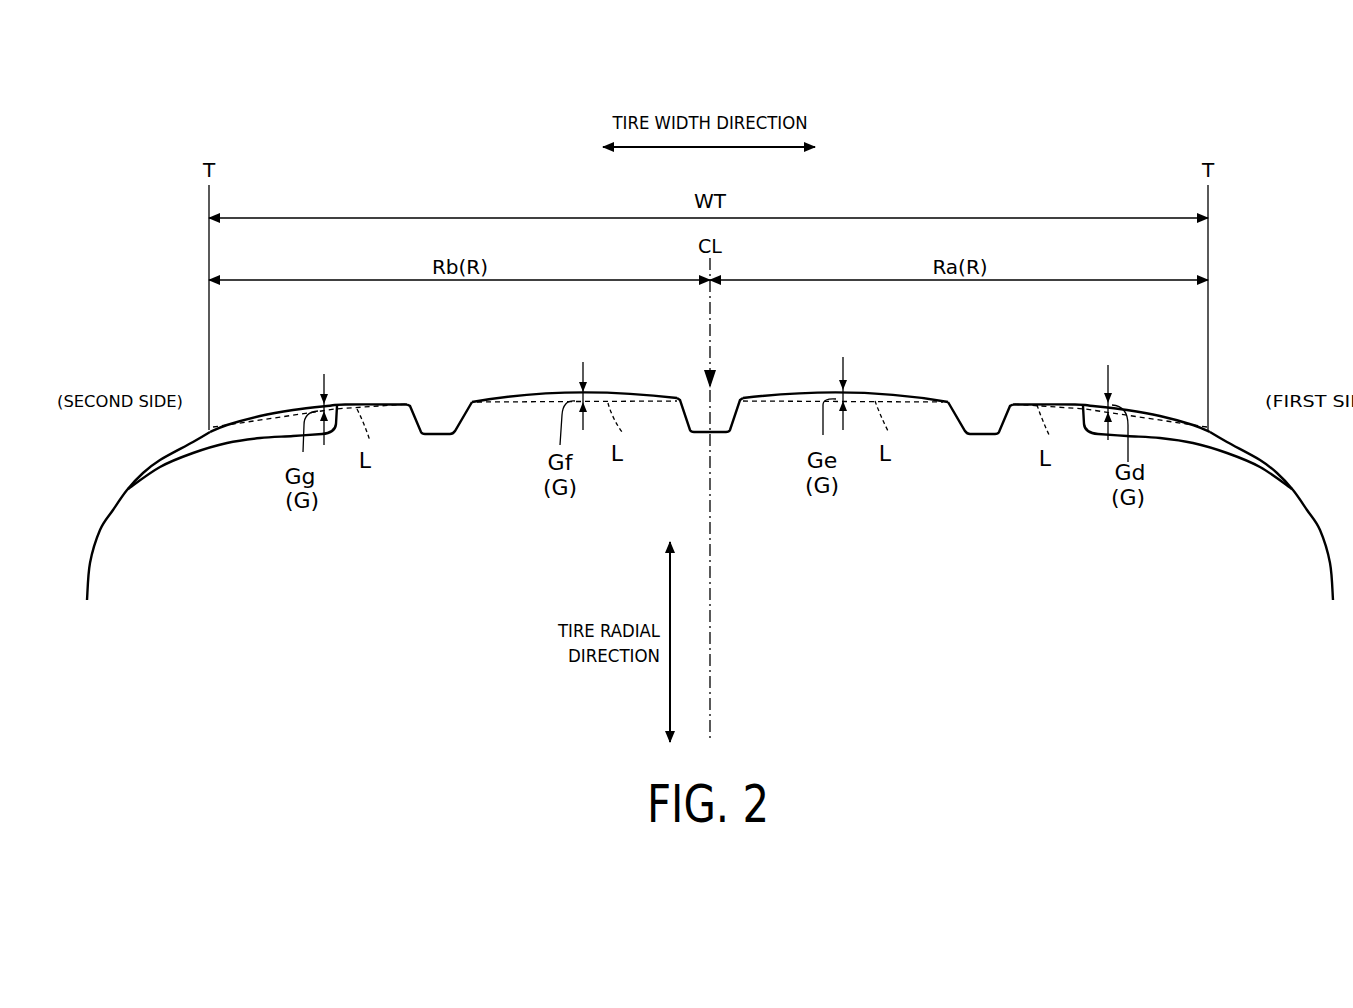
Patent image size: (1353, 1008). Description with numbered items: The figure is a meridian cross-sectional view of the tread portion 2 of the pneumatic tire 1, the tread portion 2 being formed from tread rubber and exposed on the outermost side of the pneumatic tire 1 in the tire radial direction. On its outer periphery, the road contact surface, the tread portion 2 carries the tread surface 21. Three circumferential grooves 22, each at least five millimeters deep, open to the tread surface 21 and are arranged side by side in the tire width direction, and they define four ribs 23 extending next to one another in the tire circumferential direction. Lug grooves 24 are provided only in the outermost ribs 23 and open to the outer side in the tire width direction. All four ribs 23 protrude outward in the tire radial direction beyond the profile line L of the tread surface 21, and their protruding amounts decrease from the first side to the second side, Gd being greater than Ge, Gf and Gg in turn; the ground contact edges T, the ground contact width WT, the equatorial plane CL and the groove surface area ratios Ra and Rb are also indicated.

The pneumatic tire 1 is at (1046, 186).
The tread portion 2 is at (773, 423).
The tread surface 21 is at (905, 393).
The circumferential groove 22 is at (416, 420).
The rib 23 is at (275, 413).
The lug groove 24 is at (227, 441).